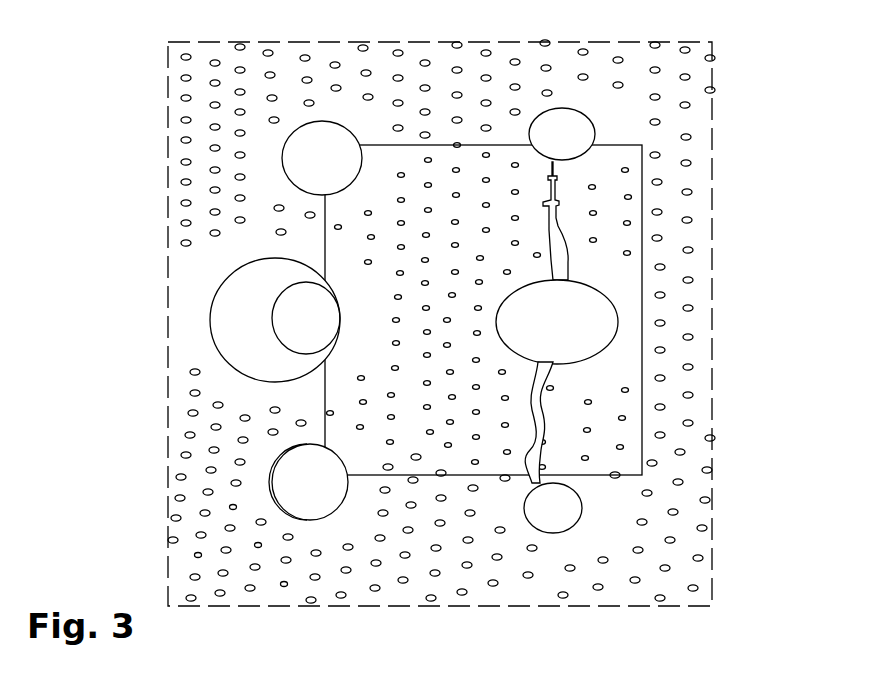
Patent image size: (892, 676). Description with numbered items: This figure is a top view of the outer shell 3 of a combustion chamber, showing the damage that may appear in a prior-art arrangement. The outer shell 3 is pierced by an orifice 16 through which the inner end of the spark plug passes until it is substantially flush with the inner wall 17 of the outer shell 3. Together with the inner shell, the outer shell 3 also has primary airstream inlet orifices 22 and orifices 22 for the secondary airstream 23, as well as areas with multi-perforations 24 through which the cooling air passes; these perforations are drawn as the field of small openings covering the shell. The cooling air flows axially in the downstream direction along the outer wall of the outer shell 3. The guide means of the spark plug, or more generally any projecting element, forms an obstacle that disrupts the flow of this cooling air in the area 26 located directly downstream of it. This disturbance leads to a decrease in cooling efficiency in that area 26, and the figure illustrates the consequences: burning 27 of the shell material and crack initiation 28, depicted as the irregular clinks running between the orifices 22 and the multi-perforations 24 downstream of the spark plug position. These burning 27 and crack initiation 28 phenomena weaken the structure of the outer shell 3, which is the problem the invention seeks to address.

The outer shell 3 is at (716, 73).
The orifice 16 is at (290, 318).
The inner wall 17 is at (695, 453).
The orifices 22 is at (323, 133).
The secondary airstream 23 is at (570, 127).
The multi-perforations 24 is at (233, 507).
The area 26 is at (618, 238).
The burning 27 is at (382, 400).
The crack initiation 28 is at (540, 410).